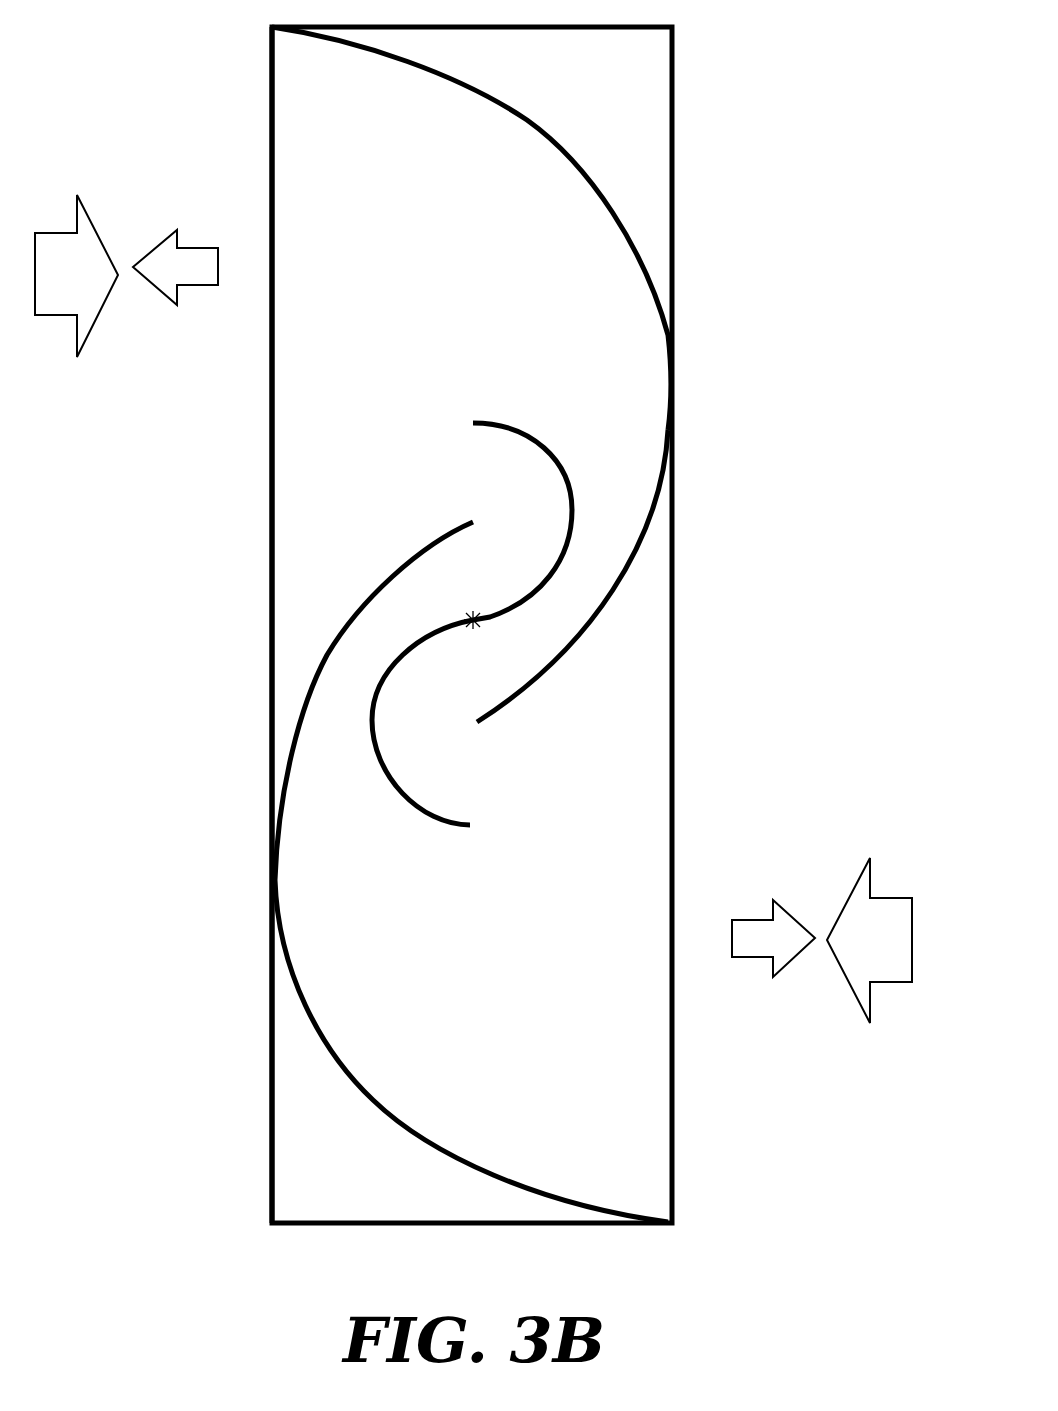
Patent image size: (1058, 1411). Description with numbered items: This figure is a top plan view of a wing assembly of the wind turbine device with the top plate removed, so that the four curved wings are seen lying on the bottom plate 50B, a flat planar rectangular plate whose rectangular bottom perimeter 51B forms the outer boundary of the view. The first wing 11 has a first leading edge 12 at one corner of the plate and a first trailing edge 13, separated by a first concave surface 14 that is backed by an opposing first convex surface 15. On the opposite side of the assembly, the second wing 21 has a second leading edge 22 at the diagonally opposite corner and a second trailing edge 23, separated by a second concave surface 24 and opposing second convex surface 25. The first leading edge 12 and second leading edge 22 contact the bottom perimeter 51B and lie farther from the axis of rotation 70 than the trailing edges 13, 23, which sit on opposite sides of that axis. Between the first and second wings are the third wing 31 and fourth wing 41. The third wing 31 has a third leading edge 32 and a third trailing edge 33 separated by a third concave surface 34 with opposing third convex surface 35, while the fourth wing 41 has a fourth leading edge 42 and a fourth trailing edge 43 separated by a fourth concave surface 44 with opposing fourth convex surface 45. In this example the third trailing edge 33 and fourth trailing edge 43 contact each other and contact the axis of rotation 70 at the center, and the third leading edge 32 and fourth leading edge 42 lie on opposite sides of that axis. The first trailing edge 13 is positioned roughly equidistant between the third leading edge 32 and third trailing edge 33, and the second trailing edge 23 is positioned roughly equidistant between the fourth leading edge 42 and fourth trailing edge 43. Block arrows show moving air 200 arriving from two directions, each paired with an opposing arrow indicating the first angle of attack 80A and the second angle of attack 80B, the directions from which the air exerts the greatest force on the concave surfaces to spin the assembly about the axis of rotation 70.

The first wing 11 is at (527, 118).
The first leading edge 12 is at (278, 28).
The first trailing edge 13 is at (475, 722).
The first concave surface 14 is at (638, 275).
The first convex surface 15 is at (657, 242).
The second wing 21 is at (383, 1100).
The second leading edge 22 is at (668, 1220).
The second trailing edge 23 is at (475, 522).
The second concave surface 24 is at (309, 963).
The second convex surface 25 is at (282, 996).
The third wing 31 is at (532, 440).
The third leading edge 32 is at (473, 423).
The third trailing edge 33 is at (476, 628).
The third concave surface 34 is at (556, 519).
The third convex surface 35 is at (584, 489).
The fourth wing 41 is at (395, 795).
The fourth leading edge 42 is at (477, 823).
The fourth trailing edge 43 is at (474, 618).
The fourth concave surface 44 is at (389, 737).
The fourth convex surface 45 is at (358, 725).
The axis of rotation 70 is at (470, 620).
The bottom plate 50B is at (305, 508).
The bottom perimeter 51B is at (268, 603).
The moving air 200 is at (92, 283).
The first angle of attack 80A is at (207, 280).
The second angle of attack 80B is at (790, 952).